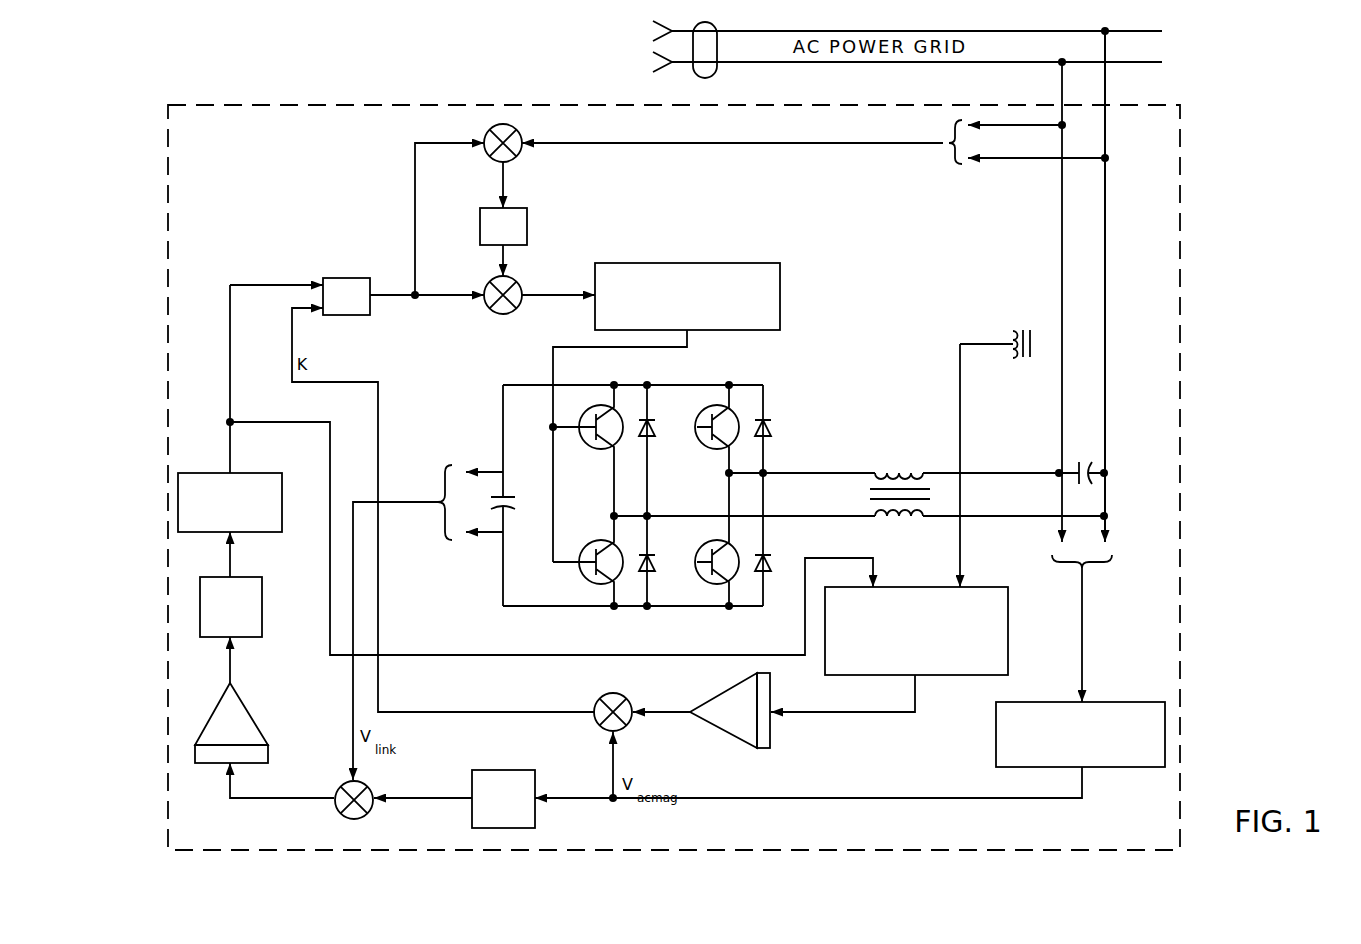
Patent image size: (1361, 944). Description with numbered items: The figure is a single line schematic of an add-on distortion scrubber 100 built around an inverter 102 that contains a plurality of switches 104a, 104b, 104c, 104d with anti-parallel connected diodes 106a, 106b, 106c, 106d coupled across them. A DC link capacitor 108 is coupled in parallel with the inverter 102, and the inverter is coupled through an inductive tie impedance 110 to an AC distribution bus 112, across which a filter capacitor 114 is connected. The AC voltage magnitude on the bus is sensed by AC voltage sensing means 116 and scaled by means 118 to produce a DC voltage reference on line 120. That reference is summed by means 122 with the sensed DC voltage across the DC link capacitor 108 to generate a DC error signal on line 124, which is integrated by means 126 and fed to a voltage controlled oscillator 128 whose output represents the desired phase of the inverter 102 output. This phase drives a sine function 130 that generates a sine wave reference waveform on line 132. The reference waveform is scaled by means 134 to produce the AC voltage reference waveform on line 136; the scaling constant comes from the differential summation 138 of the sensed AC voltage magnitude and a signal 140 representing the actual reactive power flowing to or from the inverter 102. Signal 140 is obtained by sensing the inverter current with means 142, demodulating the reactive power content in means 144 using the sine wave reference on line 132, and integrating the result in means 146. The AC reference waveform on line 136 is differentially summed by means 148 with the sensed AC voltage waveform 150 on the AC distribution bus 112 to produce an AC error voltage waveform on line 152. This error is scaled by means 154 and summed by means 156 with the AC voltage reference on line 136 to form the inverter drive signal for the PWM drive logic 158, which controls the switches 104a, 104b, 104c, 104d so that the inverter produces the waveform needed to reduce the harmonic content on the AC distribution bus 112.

The add-on distortion scrubber 100 is at (1180, 300).
The inverter 102 is at (812, 384).
The switch 104a is at (573, 404).
The switch 104b is at (578, 570).
The switch 104c is at (700, 395).
The switch 104d is at (697, 580).
The anti-parallel connected diode 106a is at (657, 427).
The anti-parallel connected diode 106b is at (647, 572).
The anti-parallel connected diode 106c is at (767, 435).
The anti-parallel connected diode 106d is at (767, 563).
The DC link capacitor 108 is at (497, 525).
The inductive tie impedance 110 is at (898, 462).
The AC distribution bus 112 is at (708, 78).
The filter capacitor 114 is at (1088, 468).
The AC voltage sensing means 116 is at (1140, 702).
The scaling means 118 is at (538, 830).
The DC voltage reference line 120 is at (445, 798).
The summing means 122 is at (345, 818).
The DC error signal line 124 is at (295, 798).
The integrating means 126 is at (258, 718).
The voltage controlled oscillator 128 is at (263, 635).
The sine function 130 is at (245, 473).
The sine wave reference waveform line 132 is at (222, 302).
The scaling means 134 is at (362, 278).
The AC voltage reference waveform line 136 is at (378, 302).
The differential summation 138 is at (602, 700).
The reactive power signal 140 is at (660, 710).
The current sensing means 142 is at (1010, 325).
The demodulating means 144 is at (962, 722).
The integrating means 146 is at (757, 748).
The differential summing means 148 is at (487, 147).
The sensed AC voltage waveform 150 is at (743, 143).
The AC error voltage waveform line 152 is at (510, 172).
The scaling means 154 is at (527, 230).
The summing means 156 is at (495, 316).
The PWM drive logic 158 is at (780, 325).